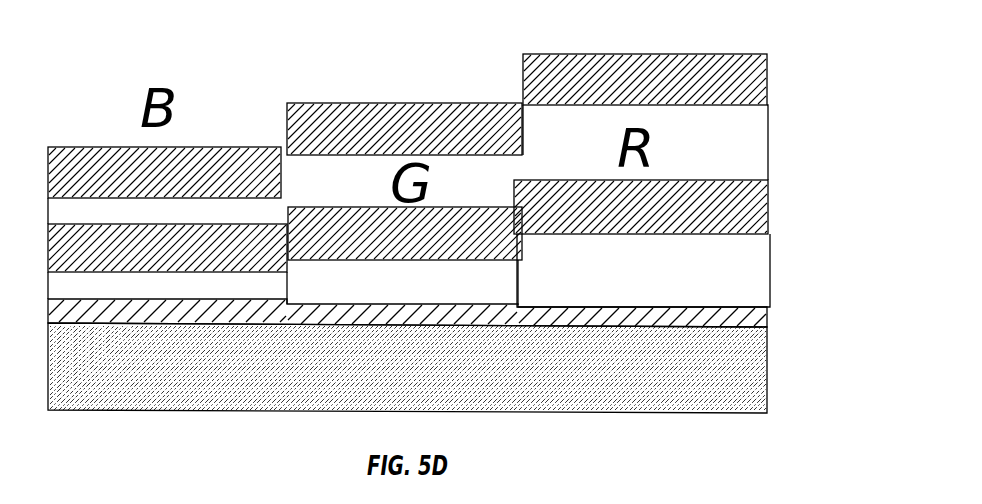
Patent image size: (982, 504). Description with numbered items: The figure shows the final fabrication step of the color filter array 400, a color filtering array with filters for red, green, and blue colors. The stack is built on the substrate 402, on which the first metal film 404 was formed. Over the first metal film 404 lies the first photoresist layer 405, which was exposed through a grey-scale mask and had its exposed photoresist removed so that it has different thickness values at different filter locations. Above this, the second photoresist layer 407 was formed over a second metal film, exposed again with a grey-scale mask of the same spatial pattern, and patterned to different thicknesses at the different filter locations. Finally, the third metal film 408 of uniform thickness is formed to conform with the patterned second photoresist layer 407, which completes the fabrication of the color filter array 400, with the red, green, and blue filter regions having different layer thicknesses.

The third metal film 408 is at (685, 72).
The second photoresist layer 407 is at (685, 138).
The color filter array 400 is at (680, 198).
The first photoresist layer 405 is at (682, 264).
The first metal film 404 is at (447, 304).
The substrate 402 is at (447, 368).